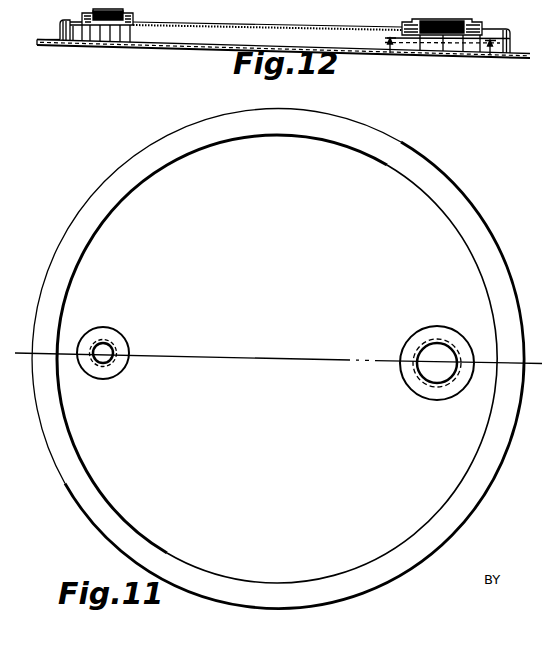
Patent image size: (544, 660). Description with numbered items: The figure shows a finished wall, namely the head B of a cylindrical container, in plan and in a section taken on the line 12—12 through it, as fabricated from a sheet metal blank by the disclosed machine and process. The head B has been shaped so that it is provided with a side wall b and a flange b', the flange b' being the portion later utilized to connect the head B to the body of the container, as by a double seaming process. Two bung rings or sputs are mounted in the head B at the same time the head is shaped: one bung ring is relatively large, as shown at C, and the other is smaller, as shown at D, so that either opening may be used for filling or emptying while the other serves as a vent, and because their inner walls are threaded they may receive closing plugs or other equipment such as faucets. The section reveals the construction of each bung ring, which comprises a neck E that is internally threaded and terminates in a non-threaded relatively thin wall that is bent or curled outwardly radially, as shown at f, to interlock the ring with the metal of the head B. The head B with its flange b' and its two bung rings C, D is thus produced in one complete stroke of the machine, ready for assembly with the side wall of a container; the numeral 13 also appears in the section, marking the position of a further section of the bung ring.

In FIG. 12, the head B is at (283, 29).
In FIG. 11, the head B is at (277, 359).
In FIG. 12, the side wall b is at (57, 24).
In FIG. 12, the flange b' is at (48, 54).
In FIG. 11, the flange b' is at (278, 359).
In FIG. 12, the bung ring D is at (133, 27).
In FIG. 11, the bung ring D is at (121, 335).
In FIG. 12, the neck E is at (457, 7).
In FIG. 12, the outwardly curled wall portion f is at (468, 22).
In FIG. 12, the bung ring C is at (417, 37).
In FIG. 11, the bung ring C is at (419, 331).
In FIG. 12, the section line arrows 13 is at (490, 66).
In FIG. 11, the section line 12 is at (276, 361).